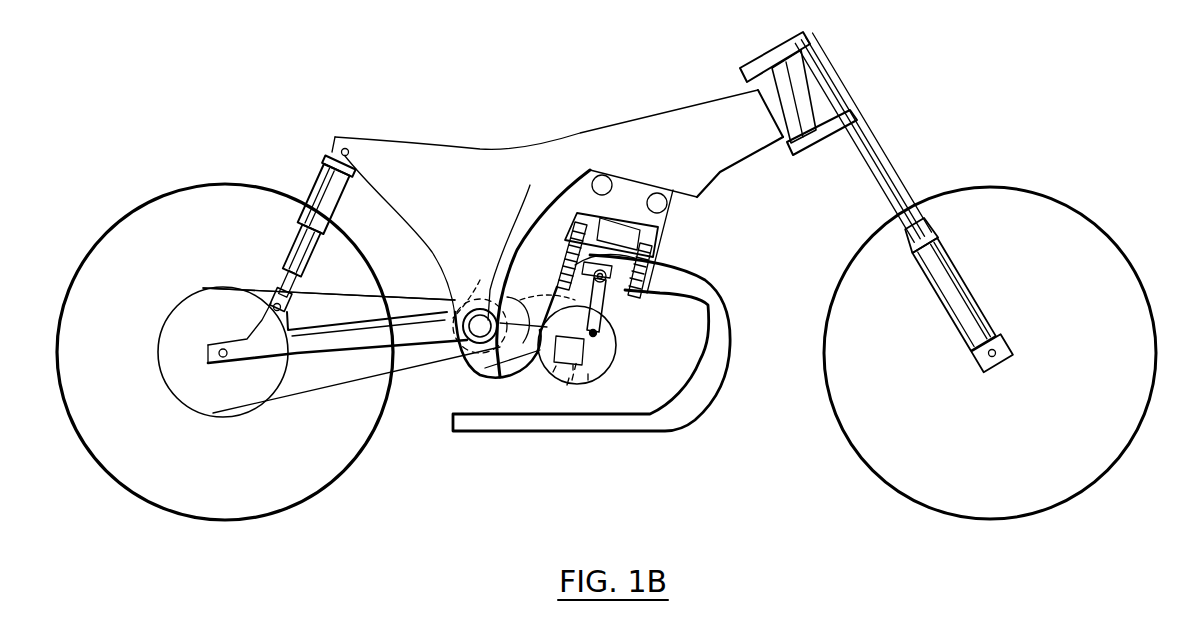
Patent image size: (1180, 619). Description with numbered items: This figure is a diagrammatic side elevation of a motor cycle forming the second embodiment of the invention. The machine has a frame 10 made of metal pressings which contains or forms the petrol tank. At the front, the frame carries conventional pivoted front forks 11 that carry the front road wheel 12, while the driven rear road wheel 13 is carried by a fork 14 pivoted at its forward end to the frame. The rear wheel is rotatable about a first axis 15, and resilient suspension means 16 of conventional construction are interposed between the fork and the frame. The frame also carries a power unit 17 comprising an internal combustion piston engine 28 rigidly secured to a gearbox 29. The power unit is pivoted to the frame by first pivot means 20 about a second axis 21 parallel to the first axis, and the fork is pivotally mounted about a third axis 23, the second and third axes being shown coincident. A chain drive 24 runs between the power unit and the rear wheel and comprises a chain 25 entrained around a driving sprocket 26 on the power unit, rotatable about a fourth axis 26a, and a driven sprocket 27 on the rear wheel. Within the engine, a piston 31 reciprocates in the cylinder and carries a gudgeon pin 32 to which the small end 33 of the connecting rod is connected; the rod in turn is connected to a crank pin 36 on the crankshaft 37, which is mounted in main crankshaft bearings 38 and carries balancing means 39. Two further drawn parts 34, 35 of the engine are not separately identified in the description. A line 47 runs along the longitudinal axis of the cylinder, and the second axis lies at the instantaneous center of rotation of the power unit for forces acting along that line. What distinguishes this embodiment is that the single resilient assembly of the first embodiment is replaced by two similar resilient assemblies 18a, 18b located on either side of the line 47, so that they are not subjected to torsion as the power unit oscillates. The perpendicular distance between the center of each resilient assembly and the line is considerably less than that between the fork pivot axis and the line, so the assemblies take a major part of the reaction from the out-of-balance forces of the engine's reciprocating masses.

The frame 10 is at (574, 182).
The front forks 11 is at (887, 170).
The front road wheel 12 is at (840, 398).
The rear road wheel 13 is at (366, 424).
The fork 14 is at (392, 330).
The first axis 15 is at (223, 358).
The resilient suspension means 16 is at (316, 197).
The power unit 17 is at (640, 385).
The resilient assembly 18a is at (604, 175).
The resilient assembly 18b is at (670, 205).
The first pivot means 20 is at (467, 316).
The second axis 21 is at (480, 312).
The third axis 23 is at (484, 310).
The chain drive 24 is at (368, 293).
The chain 25 is at (333, 293).
The driving sprocket 26 is at (541, 297).
The fourth axis 26a is at (505, 300).
The driven sprocket 27 is at (187, 393).
The internal combustion piston engine 28 is at (640, 297).
The gearbox 29 is at (542, 290).
The piston 31 is at (700, 292).
The gudgeon pin 32 is at (600, 290).
The small end 33 is at (620, 330).
The crank pin 34 is at (615, 386).
The counterweight 35 is at (593, 370).
The crank pin 36 is at (588, 380).
The crankshaft 37 is at (573, 370).
The main crankshaft bearings 38 is at (572, 380).
The balancing means 39 is at (553, 372).
The line 47 is at (567, 385).